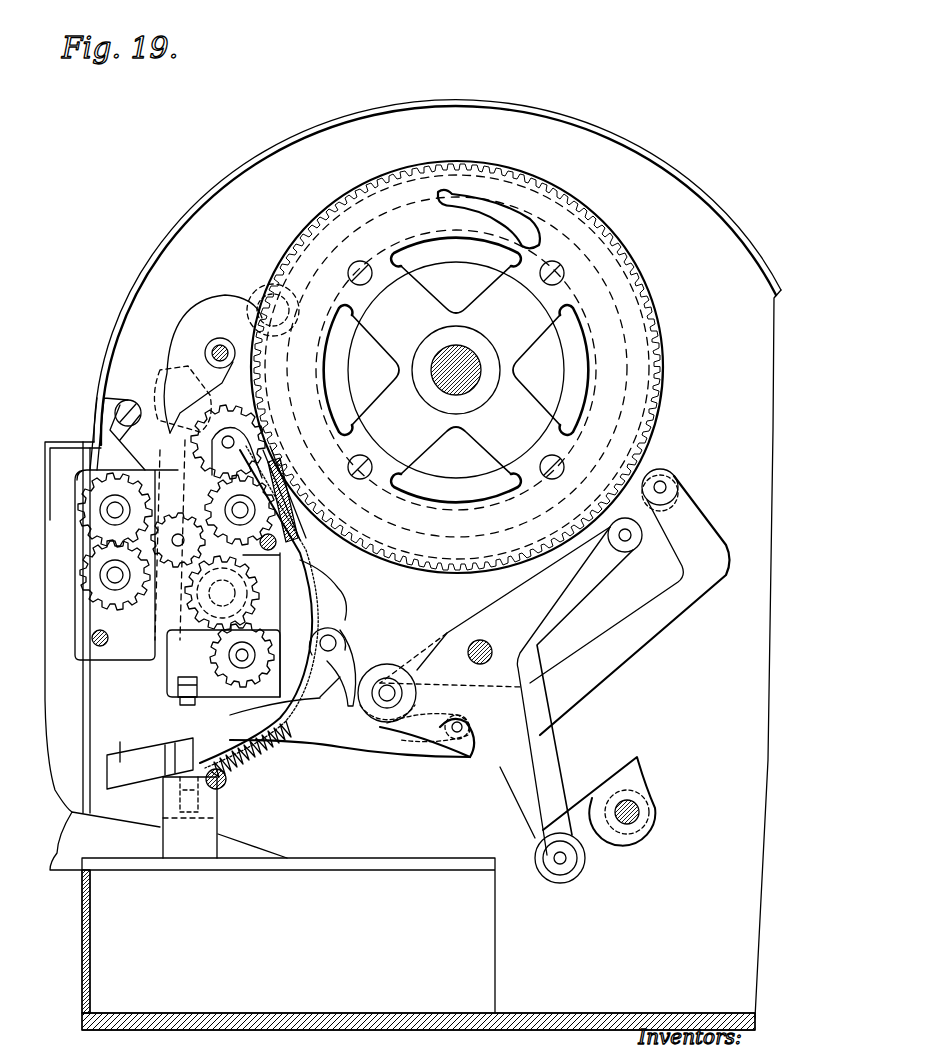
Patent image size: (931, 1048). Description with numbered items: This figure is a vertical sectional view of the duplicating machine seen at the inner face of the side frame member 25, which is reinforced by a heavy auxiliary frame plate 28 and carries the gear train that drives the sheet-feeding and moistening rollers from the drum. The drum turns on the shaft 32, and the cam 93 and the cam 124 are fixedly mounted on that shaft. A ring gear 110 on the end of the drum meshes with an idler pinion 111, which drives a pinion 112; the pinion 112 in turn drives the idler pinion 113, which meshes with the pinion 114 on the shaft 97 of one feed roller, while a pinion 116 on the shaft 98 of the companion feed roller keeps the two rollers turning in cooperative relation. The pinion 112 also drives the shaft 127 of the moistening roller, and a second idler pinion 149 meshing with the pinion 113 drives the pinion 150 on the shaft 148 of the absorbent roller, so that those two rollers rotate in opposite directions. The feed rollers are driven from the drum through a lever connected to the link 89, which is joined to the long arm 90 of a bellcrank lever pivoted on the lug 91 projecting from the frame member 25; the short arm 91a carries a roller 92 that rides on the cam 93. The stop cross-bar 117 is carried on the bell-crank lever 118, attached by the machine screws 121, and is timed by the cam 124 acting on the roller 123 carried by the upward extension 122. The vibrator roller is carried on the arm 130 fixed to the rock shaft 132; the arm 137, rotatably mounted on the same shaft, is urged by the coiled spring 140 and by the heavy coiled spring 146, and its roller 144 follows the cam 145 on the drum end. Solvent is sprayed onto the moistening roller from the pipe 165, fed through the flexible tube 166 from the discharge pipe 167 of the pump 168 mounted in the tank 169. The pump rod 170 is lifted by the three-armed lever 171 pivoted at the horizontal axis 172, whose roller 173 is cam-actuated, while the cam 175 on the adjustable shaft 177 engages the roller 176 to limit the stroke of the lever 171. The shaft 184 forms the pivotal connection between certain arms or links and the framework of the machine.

The frame member 25 is at (205, 218).
The cam 145 is at (425, 168).
The ring gear 110 is at (352, 195).
The cam 124 is at (285, 290).
The roller 123 is at (262, 282).
The upward extension 122 is at (205, 297).
The shaft 184 is at (212, 347).
The lug 91 is at (160, 372).
The machine screws 121 is at (120, 400).
The idler pinion 111 is at (222, 400).
The bell-crank lever 118 is at (98, 440).
The pinion 114 is at (82, 492).
The shaft 97 is at (115, 497).
The pinion 112 is at (228, 500).
The cross-bar 117 is at (113, 568).
The pinion 116 is at (92, 574).
The shaft 98 is at (110, 578).
The idler pinion 113 is at (182, 612).
The shaft 127 is at (296, 462).
The pipe 165 is at (292, 518).
The shaft 32 is at (470, 374).
The cam 93 is at (650, 342).
The roller 144 is at (672, 470).
The roller 92 is at (395, 537).
The short arm 91a is at (340, 586).
The flexible tube 166 is at (318, 590).
The arm 130 is at (350, 650).
The rock shaft 132 is at (390, 685).
The horizontal axis 172 is at (475, 641).
The roller 173 is at (627, 552).
The arm 137 is at (640, 650).
The coiled spring 140 is at (320, 695).
The three-armed lever 171 is at (350, 740).
The idler pinion 149 is at (223, 663).
The shaft 148 is at (229, 658).
The auxiliary frame plates 28 is at (162, 684).
The long arm 90 is at (178, 690).
The pinion 150 is at (240, 688).
The link 89 is at (108, 741).
The pump rod 170 is at (150, 763).
The coiled spring 146 is at (228, 780).
The discharge pipe 167 is at (205, 812).
The pump 168 is at (217, 832).
The tank 169 is at (340, 883).
The shaft 177 is at (640, 808).
The cam 175 is at (625, 858).
The roller 176 is at (555, 870).